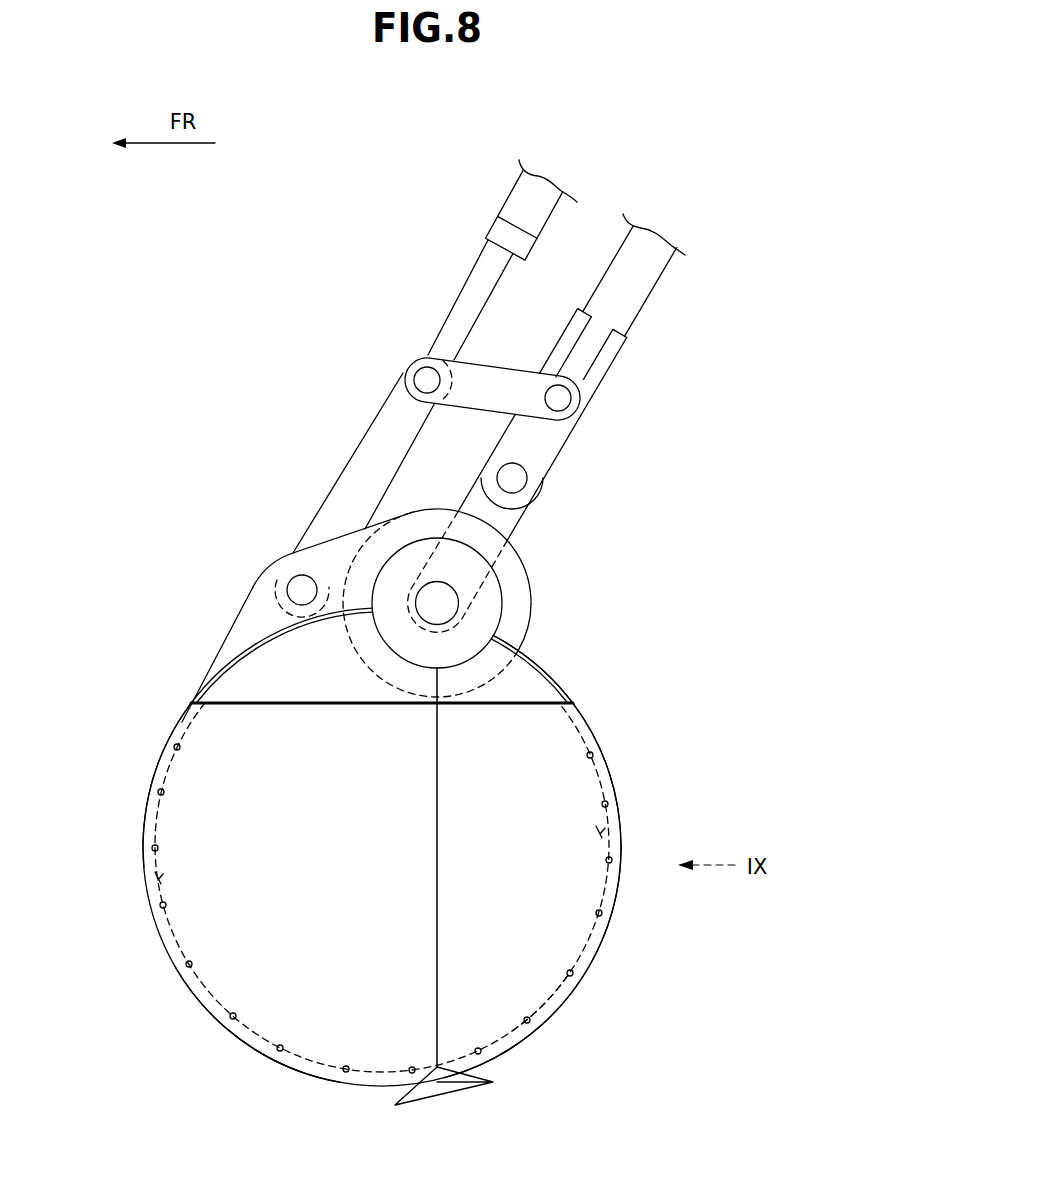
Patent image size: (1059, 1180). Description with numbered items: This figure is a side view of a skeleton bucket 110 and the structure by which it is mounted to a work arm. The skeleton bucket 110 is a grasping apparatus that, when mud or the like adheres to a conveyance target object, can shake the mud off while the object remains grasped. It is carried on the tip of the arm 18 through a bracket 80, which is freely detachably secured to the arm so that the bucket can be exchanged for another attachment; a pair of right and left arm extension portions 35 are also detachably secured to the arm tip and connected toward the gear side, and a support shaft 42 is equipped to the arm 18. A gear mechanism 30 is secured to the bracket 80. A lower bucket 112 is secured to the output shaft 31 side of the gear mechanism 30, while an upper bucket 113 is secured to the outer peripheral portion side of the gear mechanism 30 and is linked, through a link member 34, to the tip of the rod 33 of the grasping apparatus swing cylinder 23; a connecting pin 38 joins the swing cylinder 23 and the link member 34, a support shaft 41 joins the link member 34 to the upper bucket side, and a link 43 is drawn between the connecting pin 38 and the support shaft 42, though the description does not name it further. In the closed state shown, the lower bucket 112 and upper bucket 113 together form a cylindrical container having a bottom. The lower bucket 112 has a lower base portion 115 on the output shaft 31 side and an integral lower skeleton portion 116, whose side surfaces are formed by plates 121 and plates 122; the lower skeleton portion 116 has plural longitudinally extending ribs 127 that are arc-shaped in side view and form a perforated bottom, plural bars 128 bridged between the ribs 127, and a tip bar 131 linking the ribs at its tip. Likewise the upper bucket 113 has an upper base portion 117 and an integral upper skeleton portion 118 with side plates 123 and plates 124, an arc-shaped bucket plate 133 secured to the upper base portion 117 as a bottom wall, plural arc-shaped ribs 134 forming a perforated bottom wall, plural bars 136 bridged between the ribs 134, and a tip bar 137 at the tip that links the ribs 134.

The arm 18 is at (640, 267).
The grasping apparatus swing cylinder 23 is at (505, 200).
The gear mechanism 30 is at (530, 575).
The output shaft 31 is at (447, 603).
The rod 33 is at (473, 284).
The link member 34 is at (378, 437).
The arm extension portion 35 is at (513, 527).
The connecting pin 38 is at (425, 377).
The support shaft 41 is at (300, 588).
The support shaft 42 is at (558, 398).
The link 43 is at (483, 350).
The bracket 80 is at (542, 548).
The skeleton bucket 110 is at (148, 755).
The lower bucket 112 is at (612, 770).
The upper bucket 113 is at (135, 805).
The lower base portion 115 is at (552, 667).
The lower skeleton portion 116 is at (620, 897).
The upper base portion 117 is at (252, 640).
The upper skeleton portion 118 is at (210, 1018).
The plate 121 is at (540, 692).
The plate 122 is at (513, 967).
The plate 123 is at (243, 682).
The plate 124 is at (283, 1012).
The rib 127 is at (602, 832).
The bar 128 is at (610, 804).
The tip bar 131 is at (485, 1058).
The bucket plate 133 is at (268, 633).
The rib 134 is at (160, 882).
The bar 136 is at (176, 745).
The tip bar 137 is at (415, 1082).